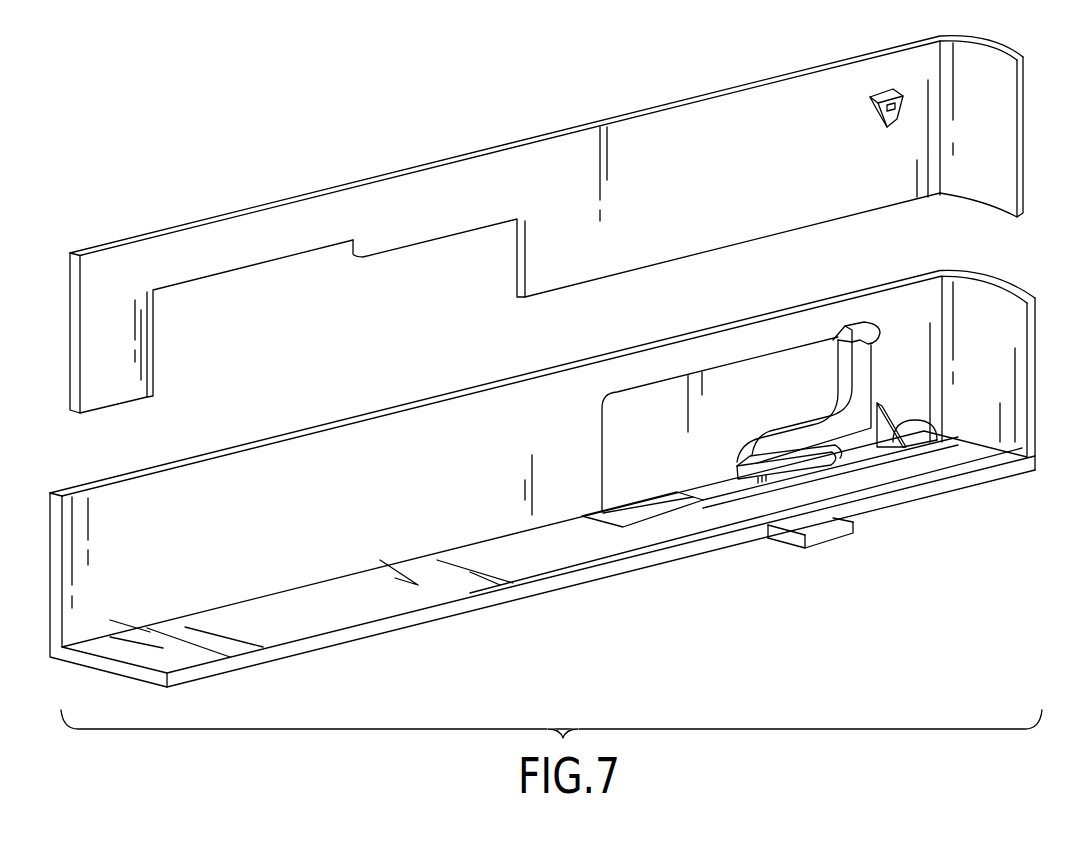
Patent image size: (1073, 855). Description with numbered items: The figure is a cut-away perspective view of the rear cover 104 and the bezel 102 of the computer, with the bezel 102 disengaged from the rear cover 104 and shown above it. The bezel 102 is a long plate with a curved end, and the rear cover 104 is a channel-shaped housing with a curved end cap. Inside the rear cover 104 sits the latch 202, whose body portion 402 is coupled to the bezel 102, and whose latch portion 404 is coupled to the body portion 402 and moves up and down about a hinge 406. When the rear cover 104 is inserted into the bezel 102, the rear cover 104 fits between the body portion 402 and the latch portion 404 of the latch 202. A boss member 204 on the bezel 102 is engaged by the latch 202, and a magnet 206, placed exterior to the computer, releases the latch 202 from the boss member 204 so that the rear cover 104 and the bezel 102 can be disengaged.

The bezel 102 is at (677, 100).
The rear cover 104 is at (463, 388).
The latch 202 is at (842, 332).
The boss member 204 is at (870, 113).
The magnet 206 is at (832, 538).
The body portion 402 is at (723, 380).
The latch portion 404 is at (880, 335).
The hinge 406 is at (938, 437).